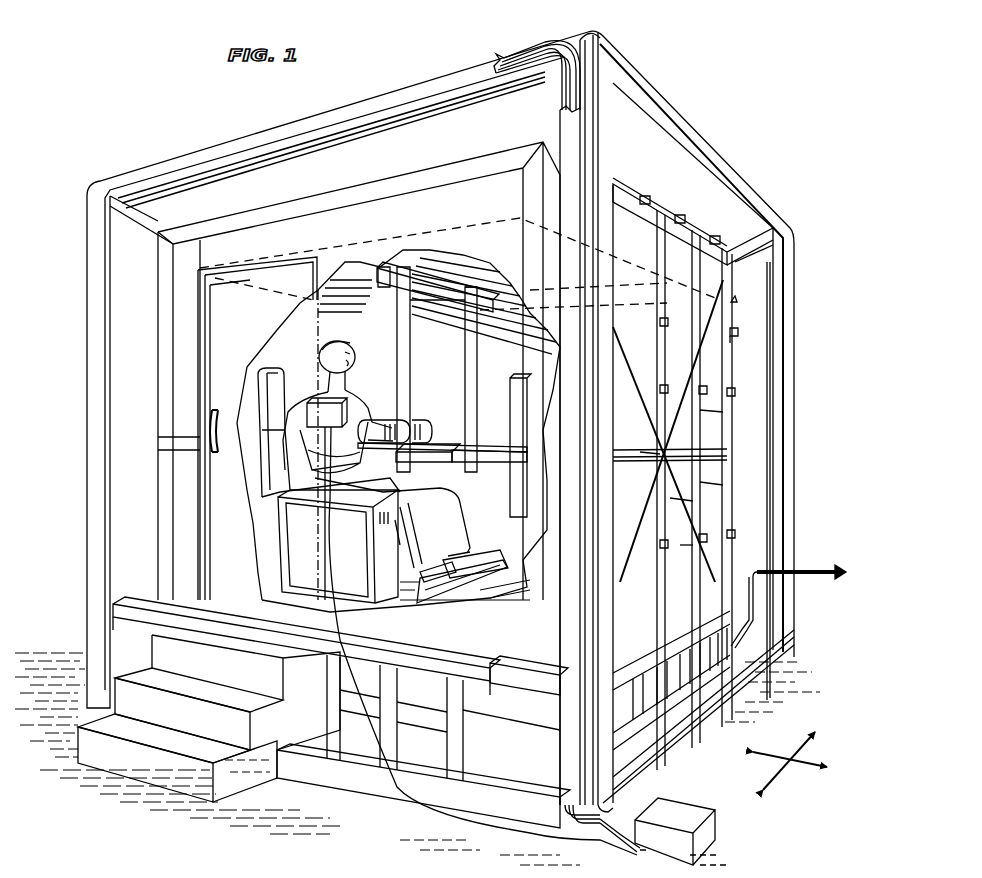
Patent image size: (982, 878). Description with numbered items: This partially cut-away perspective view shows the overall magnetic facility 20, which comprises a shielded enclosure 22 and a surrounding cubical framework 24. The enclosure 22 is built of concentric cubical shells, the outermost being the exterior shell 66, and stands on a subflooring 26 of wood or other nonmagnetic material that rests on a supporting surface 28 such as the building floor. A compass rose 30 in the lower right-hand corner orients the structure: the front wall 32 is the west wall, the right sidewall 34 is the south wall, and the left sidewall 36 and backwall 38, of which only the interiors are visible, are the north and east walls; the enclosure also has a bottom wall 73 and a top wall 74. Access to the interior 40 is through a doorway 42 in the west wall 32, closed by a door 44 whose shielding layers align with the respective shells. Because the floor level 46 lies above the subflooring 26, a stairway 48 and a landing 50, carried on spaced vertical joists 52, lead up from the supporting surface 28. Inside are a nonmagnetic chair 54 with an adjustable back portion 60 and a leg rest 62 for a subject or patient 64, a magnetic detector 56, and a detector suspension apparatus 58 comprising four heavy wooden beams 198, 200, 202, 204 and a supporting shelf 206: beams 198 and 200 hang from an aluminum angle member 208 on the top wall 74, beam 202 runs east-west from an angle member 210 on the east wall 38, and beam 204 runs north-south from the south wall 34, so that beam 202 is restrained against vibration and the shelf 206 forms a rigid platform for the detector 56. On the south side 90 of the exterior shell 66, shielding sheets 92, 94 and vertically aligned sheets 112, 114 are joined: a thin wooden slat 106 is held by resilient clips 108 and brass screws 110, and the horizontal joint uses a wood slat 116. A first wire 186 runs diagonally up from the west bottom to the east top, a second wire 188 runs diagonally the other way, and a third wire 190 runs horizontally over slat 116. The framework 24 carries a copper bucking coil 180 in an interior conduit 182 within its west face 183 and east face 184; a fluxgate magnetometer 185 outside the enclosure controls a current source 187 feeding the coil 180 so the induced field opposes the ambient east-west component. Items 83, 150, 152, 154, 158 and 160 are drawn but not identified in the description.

The magnetic facility 20 is at (207, 130).
The shielded enclosure 22 is at (455, 160).
The cubical framework 24 is at (683, 118).
The subflooring 26 is at (430, 753).
The supporting surface 28 is at (68, 707).
The compass rose 30 is at (835, 737).
The front wall 32 is at (285, 230).
The right sidewall 34 is at (638, 246).
The left sidewall 36 is at (157, 375).
The backwall 38 is at (376, 589).
The interior 40 is at (440, 265).
The doorway 42 is at (304, 258).
The door 44 is at (235, 440).
The floor level 46 is at (262, 585).
The stairway 48 is at (306, 673).
The landing 50 is at (238, 627).
The vertical joists 52 is at (446, 700).
The chair 54 is at (270, 387).
The magnetic detector 56 is at (424, 420).
The detector suspension apparatus 58 is at (481, 365).
The adjustable back portion 60 is at (277, 430).
The leg rest 62 is at (456, 600).
The subject or patient 64 is at (356, 403).
The exterior shell 66 is at (177, 765).
The bottom wall 73 is at (492, 660).
The top wall 74 is at (472, 262).
The front sill 83 is at (313, 760).
The south side 90 is at (635, 590).
The sheet 92 is at (675, 357).
The sheet 94 is at (712, 412).
The wooden slat 106 is at (690, 281).
The resilient clips 108 is at (662, 318).
The brass screw 110 is at (667, 326).
The sheet 112 is at (690, 500).
The sheet 114 is at (713, 483).
The wood slat 116 is at (718, 453).
The fastener 150 is at (736, 297).
The fastener 152 is at (736, 340).
The fastener 154 is at (737, 328).
The conductor 158 is at (440, 859).
The conductor 160 is at (507, 866).
The coil of copper wire 180 is at (520, 60).
The interior conduit 182 is at (547, 813).
The west face 183 is at (343, 117).
The east face 184 is at (727, 240).
The fluxgate magnetometer 185 is at (312, 407).
The first wire 186 is at (641, 528).
The current source 187 is at (700, 840).
The second wire 188 is at (686, 545).
The third wire 190 is at (628, 460).
The wooden beam 198 is at (412, 333).
The wooden beam 200 is at (479, 340).
The wooden beam 202 is at (440, 463).
The wooden beam 204 is at (494, 464).
The supporting shelf 206 is at (440, 443).
The aluminum angle member 208 is at (382, 265).
The aluminum angle member 210 is at (514, 412).